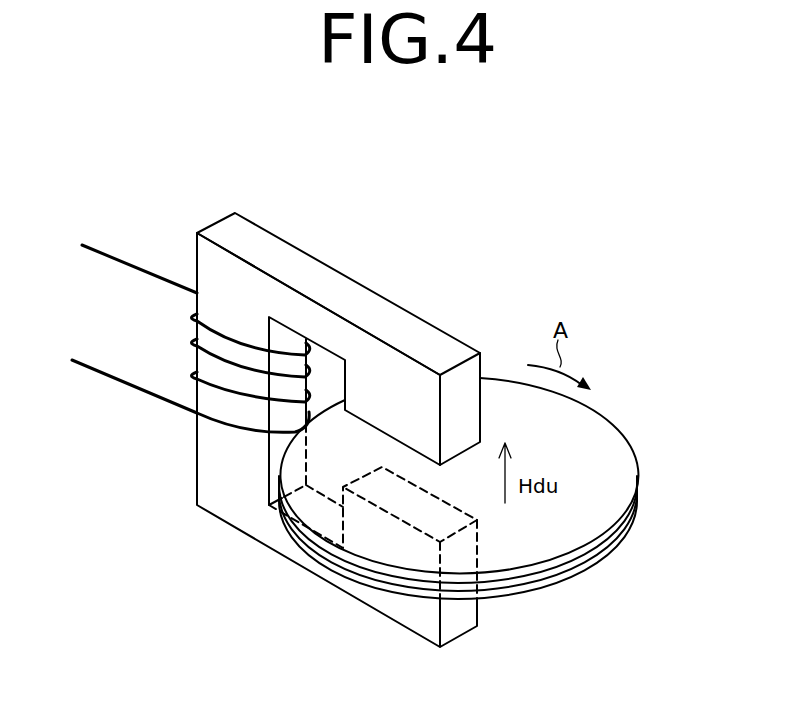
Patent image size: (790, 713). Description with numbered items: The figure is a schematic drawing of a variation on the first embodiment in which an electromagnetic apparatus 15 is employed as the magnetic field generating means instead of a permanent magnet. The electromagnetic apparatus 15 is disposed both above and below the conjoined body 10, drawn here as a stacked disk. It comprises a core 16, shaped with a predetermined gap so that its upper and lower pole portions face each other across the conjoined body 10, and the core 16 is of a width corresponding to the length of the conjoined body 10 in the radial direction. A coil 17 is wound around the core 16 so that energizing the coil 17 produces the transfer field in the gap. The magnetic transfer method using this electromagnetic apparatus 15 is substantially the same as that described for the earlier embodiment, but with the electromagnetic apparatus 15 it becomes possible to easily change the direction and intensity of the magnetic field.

The conjoined body 10 is at (615, 457).
The electromagnetic apparatus 15 is at (276, 380).
The core 16 is at (318, 268).
The coil 17 is at (120, 260).